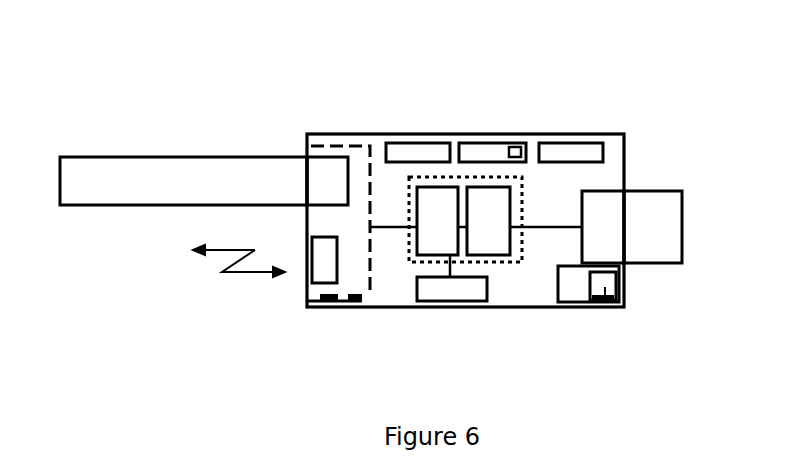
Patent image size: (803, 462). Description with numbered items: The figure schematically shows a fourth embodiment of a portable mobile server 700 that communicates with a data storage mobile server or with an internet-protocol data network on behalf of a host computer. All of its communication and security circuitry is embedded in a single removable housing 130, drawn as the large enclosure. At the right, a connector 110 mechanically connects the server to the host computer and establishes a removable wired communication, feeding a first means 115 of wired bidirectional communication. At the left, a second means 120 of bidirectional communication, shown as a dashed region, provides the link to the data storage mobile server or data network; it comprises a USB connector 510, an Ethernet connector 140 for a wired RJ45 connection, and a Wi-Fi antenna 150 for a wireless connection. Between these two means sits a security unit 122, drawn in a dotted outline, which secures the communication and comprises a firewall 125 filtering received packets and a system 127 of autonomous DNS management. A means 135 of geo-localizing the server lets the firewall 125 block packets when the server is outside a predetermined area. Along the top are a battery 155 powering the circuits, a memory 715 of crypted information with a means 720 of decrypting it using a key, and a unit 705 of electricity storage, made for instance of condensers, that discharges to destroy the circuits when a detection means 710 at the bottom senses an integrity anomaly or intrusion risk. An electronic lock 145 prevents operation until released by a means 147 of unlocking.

The portable mobile server 700 is at (468, 76).
The removable housing 130 is at (613, 134).
The second means of communication 120 is at (358, 157).
The USB connector 510 is at (163, 172).
The Ethernet connector 140 is at (312, 168).
The antenna 150 is at (322, 252).
The battery 155 is at (410, 148).
The memory of crypted information 715 is at (466, 150).
The means of decrypting 720 is at (517, 149).
The unit of electricity storage 705 is at (552, 152).
The firewall 125 is at (427, 237).
The security unit 122 is at (495, 258).
The system of autonomous DNS management 127 is at (482, 253).
The means of geo-localizing 135 is at (437, 295).
The first means of wired bidirectional communication 115 is at (613, 203).
The connector 110 is at (647, 250).
The electronic lock 145 is at (578, 290).
The means of unlocking 147 is at (608, 303).
The detection means of integrity anomaly 710 is at (318, 307).